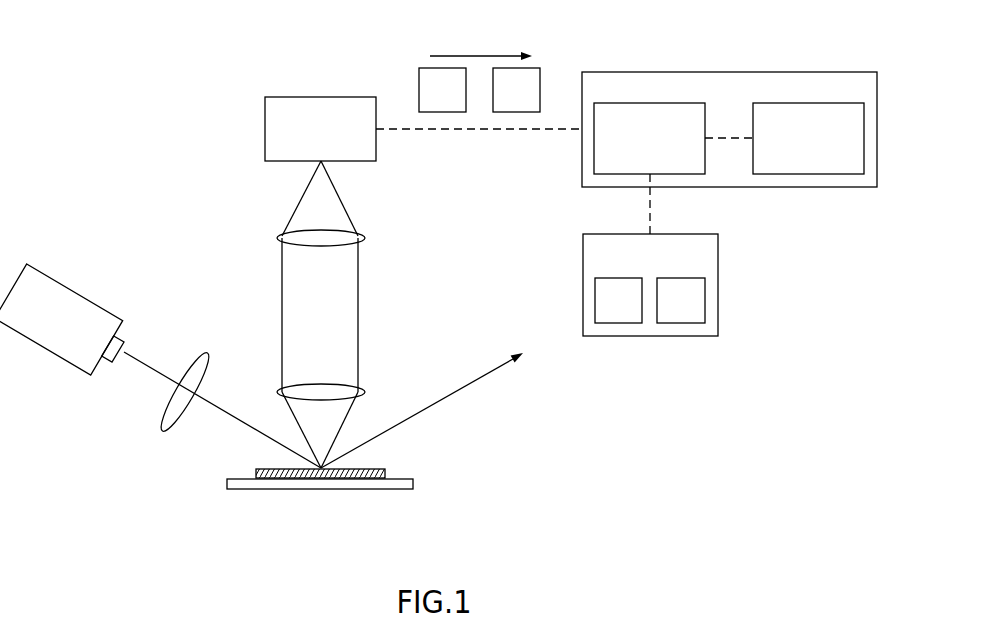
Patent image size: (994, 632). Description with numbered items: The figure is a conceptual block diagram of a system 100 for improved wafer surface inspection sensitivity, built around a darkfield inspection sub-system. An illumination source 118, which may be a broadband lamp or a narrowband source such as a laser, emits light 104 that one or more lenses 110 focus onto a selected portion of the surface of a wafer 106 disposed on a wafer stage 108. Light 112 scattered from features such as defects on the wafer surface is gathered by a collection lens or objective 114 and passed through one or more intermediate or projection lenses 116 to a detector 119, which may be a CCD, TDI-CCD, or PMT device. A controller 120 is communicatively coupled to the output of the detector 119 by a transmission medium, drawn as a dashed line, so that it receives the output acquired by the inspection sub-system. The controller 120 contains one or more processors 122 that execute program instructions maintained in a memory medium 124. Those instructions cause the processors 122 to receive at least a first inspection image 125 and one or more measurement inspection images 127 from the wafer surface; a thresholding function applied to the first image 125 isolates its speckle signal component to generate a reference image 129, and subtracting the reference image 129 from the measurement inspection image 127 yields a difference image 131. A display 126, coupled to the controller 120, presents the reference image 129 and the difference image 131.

The system 100 is at (116, 114).
The light 104 is at (135, 392).
The wafer 106 is at (256, 470).
The wafer stage 108 is at (227, 483).
The lens 110 is at (203, 353).
The scattered light 112 is at (347, 418).
The collection lens or objective 114 is at (277, 392).
The intermediate lens or projection lens 116 is at (278, 238).
The illumination source 118 is at (72, 328).
The detector 119 is at (332, 140).
The controller 120 is at (612, 91).
The processor 122 is at (624, 123).
The memory medium 124 is at (783, 123).
The first inspection image 125 is at (516, 90).
The display 126 is at (612, 255).
The measurement inspection image 127 is at (442, 90).
The reference image 129 is at (618, 300).
The difference image 131 is at (681, 300).